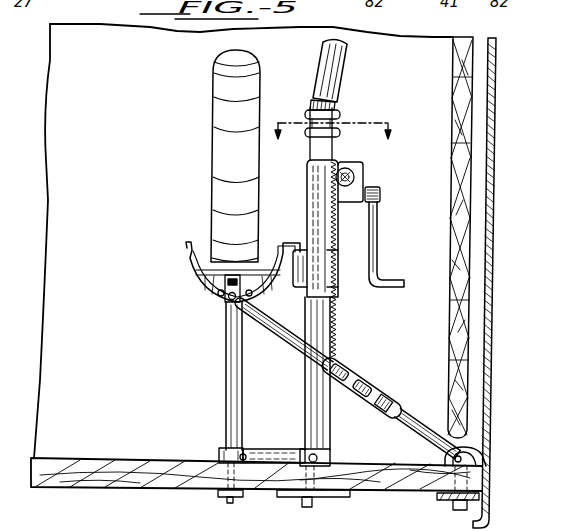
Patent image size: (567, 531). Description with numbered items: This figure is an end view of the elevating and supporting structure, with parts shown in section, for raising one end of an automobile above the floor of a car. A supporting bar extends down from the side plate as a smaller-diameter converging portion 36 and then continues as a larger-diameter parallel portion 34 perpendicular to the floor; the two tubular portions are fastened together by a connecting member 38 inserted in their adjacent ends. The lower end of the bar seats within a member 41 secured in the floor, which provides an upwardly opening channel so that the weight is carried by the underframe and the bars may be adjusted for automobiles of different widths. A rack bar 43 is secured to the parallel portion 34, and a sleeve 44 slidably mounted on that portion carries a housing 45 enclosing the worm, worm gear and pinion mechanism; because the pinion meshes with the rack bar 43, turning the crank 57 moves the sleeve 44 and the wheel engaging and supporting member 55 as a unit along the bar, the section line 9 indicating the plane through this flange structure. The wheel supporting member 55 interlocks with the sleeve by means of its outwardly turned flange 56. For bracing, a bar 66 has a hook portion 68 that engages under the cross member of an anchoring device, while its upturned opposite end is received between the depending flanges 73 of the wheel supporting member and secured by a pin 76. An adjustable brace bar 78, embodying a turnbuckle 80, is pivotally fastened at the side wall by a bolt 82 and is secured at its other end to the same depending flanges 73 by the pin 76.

The section line 9- 9 is at (335, 142).
The parallel portion 34 is at (322, 432).
The converging portion 36 is at (332, 69).
The connecting member 38 is at (314, 103).
The member 41 is at (336, 488).
The rack bar 43 is at (335, 318).
The sleeve 44 is at (318, 217).
The housing 45 is at (362, 166).
The wheel engaging and supporting member 55 is at (209, 292).
The outwardly turned flange 56 is at (306, 286).
The crank 57 is at (375, 260).
The bar 66 is at (229, 380).
The hook portion 68 is at (220, 453).
The depending flange 73 is at (273, 347).
The pin 76 is at (231, 305).
The brace bar 78 is at (432, 413).
The turnbuckle 80 is at (373, 371).
The bolt 82 is at (468, 455).